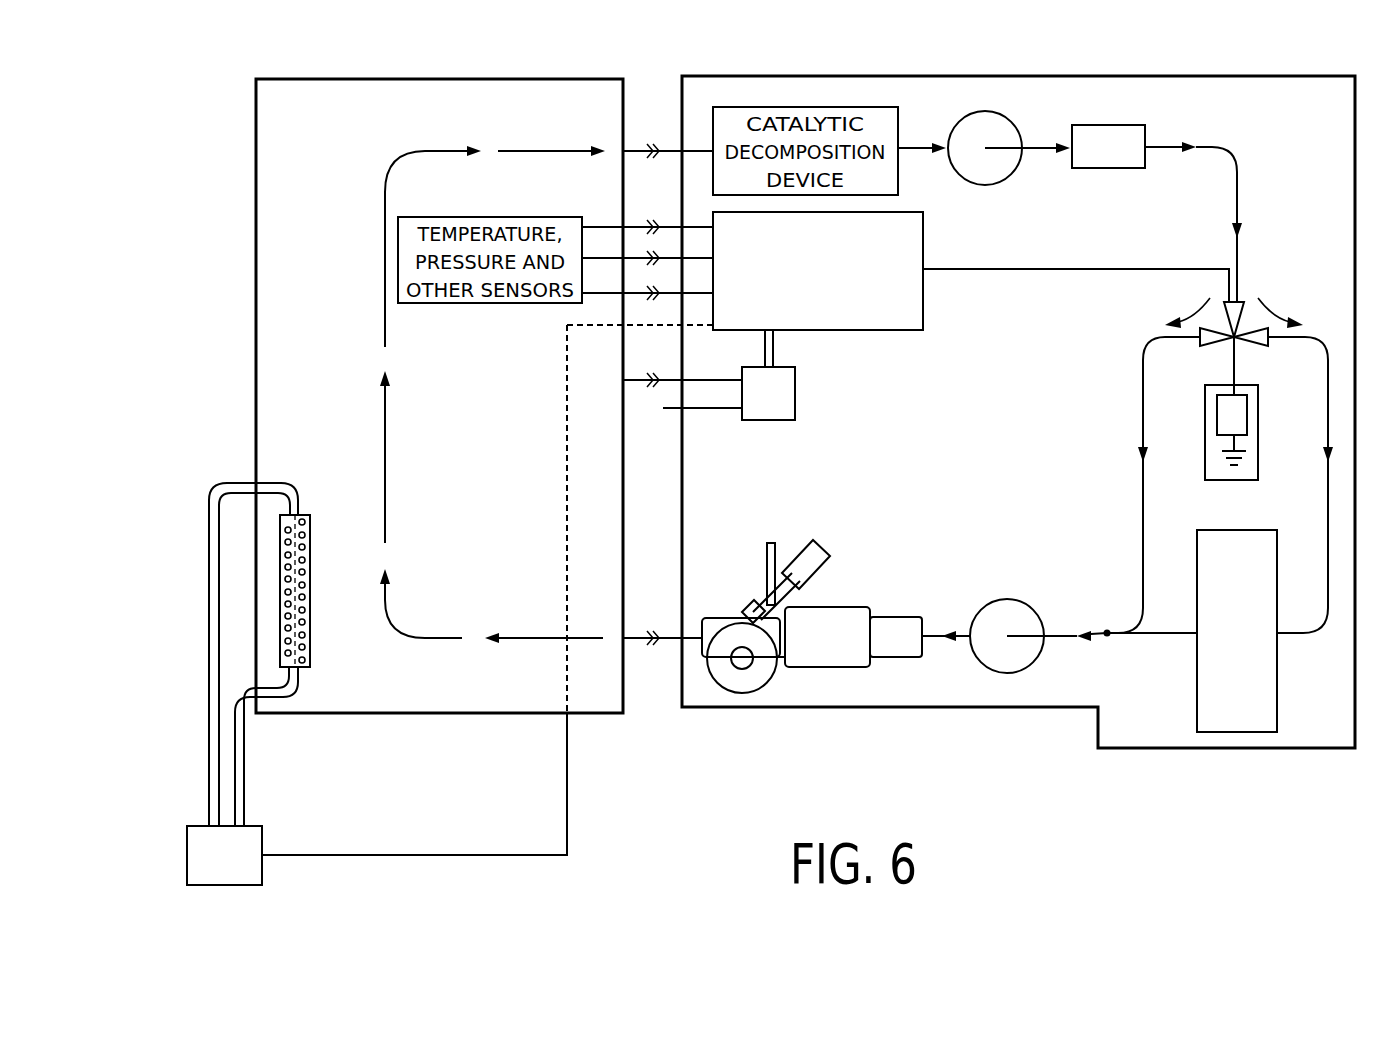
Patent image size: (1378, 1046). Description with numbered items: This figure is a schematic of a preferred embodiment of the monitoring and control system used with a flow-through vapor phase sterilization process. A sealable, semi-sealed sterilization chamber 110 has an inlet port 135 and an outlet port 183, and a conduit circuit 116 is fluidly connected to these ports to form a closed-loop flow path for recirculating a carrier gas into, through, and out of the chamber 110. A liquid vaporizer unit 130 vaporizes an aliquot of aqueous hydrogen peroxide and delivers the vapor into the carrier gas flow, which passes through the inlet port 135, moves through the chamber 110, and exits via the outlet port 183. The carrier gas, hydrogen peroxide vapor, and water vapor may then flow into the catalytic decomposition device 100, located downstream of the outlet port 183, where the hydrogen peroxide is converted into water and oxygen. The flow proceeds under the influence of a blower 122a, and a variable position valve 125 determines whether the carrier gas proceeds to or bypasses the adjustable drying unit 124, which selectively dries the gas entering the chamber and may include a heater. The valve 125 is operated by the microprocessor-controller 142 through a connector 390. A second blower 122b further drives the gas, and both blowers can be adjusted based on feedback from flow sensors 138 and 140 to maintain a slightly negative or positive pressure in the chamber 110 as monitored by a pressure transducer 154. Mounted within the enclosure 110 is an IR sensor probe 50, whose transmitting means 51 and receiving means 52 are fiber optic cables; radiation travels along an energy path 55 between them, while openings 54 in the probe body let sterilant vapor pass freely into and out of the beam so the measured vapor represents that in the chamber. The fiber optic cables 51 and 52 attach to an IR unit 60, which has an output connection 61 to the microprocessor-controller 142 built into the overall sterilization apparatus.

The sterilization chamber 110 is at (236, 126).
The outlet port 183 is at (643, 148).
The catalytic decomposition device 100 is at (835, 107).
The microprocessor-controller 142 is at (923, 305).
The pressure transducer 154 is at (800, 395).
The blower 122a is at (990, 186).
The flow sensor 138 is at (1113, 125).
The conduit circuit 116 is at (1227, 152).
The connector 390 is at (1098, 269).
The variable position valve 125 is at (1279, 296).
The adjustable drying unit 124 is at (1238, 530).
The second blower 122b is at (1000, 600).
The flow sensor 140 is at (895, 645).
The liquid vaporizer unit 130 is at (757, 672).
The inlet port 135 is at (655, 645).
The sensor probe 50 is at (326, 657).
The energy path 55 is at (303, 541).
The openings 54 is at (302, 590).
The receiving means 52 is at (211, 779).
The transmitting means 51 is at (238, 760).
The IR unit 60 is at (225, 885).
The output connection 61 is at (400, 855).